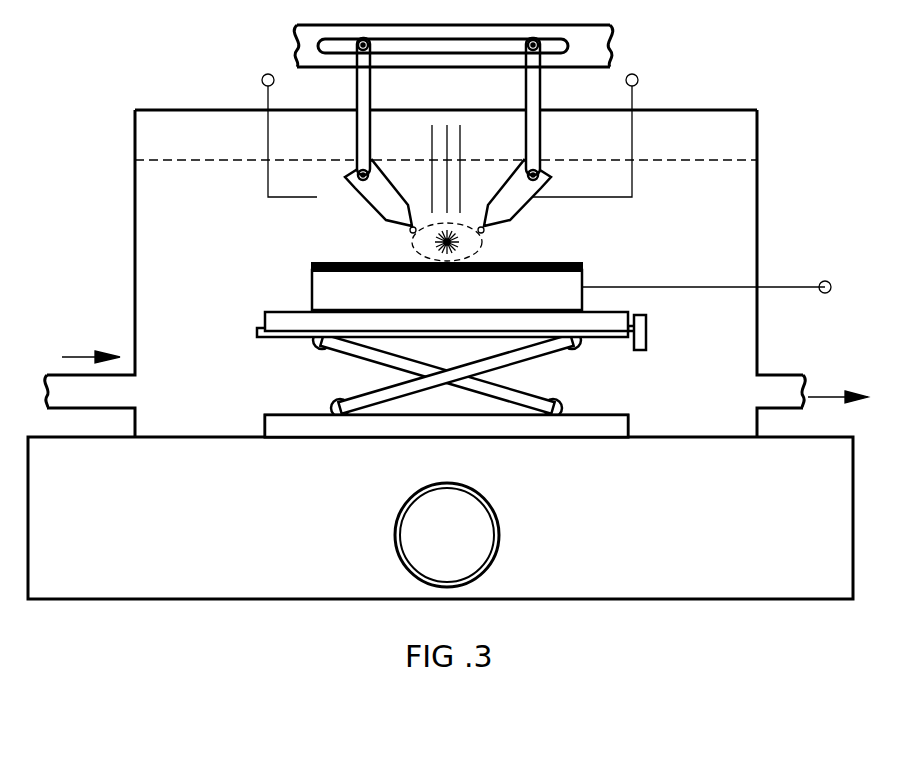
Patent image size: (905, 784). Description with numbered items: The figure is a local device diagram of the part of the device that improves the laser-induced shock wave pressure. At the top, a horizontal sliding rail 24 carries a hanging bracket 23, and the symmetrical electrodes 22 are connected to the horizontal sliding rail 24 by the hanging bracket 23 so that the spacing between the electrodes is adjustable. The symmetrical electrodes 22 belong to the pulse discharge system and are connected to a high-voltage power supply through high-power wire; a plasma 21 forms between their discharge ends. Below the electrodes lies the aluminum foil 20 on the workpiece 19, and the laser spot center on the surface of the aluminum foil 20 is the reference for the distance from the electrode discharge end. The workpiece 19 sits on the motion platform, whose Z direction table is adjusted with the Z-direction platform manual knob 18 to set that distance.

The Z-direction platform manual knob 18 is at (643, 350).
The workpiece 19 is at (550, 300).
The aluminum foil 20 is at (565, 262).
The plasma 21 is at (467, 258).
The symmetrical electrodes 22 is at (380, 195).
The hanging bracket 23 is at (365, 107).
The horizontal sliding rail 24 is at (295, 37).